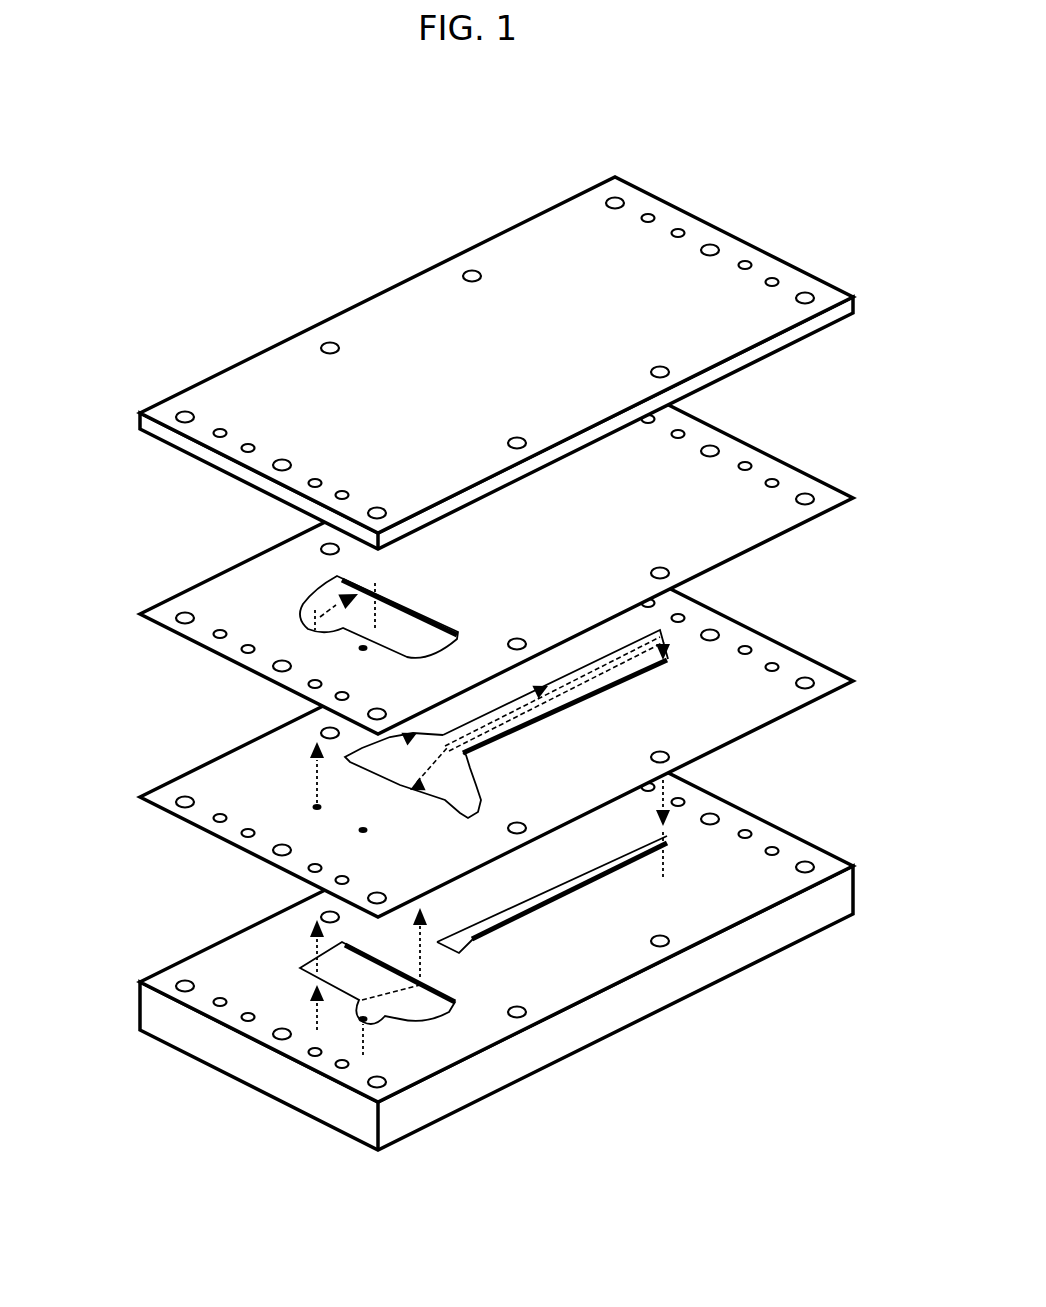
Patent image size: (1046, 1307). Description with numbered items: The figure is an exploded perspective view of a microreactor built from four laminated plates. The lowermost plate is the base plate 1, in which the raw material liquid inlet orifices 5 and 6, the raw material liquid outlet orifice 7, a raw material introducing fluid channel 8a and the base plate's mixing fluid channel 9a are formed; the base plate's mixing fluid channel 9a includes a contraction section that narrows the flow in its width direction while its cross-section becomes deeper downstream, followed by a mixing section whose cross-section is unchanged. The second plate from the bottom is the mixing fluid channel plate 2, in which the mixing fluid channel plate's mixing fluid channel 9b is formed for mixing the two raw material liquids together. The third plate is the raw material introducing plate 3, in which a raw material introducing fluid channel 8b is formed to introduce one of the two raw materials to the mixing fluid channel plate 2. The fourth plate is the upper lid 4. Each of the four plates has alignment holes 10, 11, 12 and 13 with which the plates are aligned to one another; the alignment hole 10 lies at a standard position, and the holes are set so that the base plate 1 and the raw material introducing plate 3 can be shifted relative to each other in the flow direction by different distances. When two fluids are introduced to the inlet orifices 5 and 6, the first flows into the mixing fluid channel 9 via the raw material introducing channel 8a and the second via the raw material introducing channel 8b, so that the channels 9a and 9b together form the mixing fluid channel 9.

The base plate 1 is at (136, 1006).
The mixing fluid channel plate 2 is at (138, 797).
The raw material introducing plate 3 is at (140, 615).
The upper lid 4 is at (140, 413).
The raw material liquid inlet orifice 5 is at (310, 1010).
The raw material liquid inlet orifice 6 is at (365, 1023).
The raw material liquid outlet orifice 7 is at (667, 843).
The raw material introducing fluid channel 8a is at (458, 1005).
The raw material introducing fluid channel 8b is at (305, 592).
The mixing fluid channel 9 is at (873, 1034).
The base plate's mixing fluid channel 9a is at (462, 812).
The mixing fluid channel plate's mixing fluid channel 9b is at (668, 857).
The alignment hole 10 is at (340, 1066).
The alignment hole 11 is at (313, 1053).
The alignment hole 12 is at (246, 1018).
The alignment hole 13 is at (216, 1003).